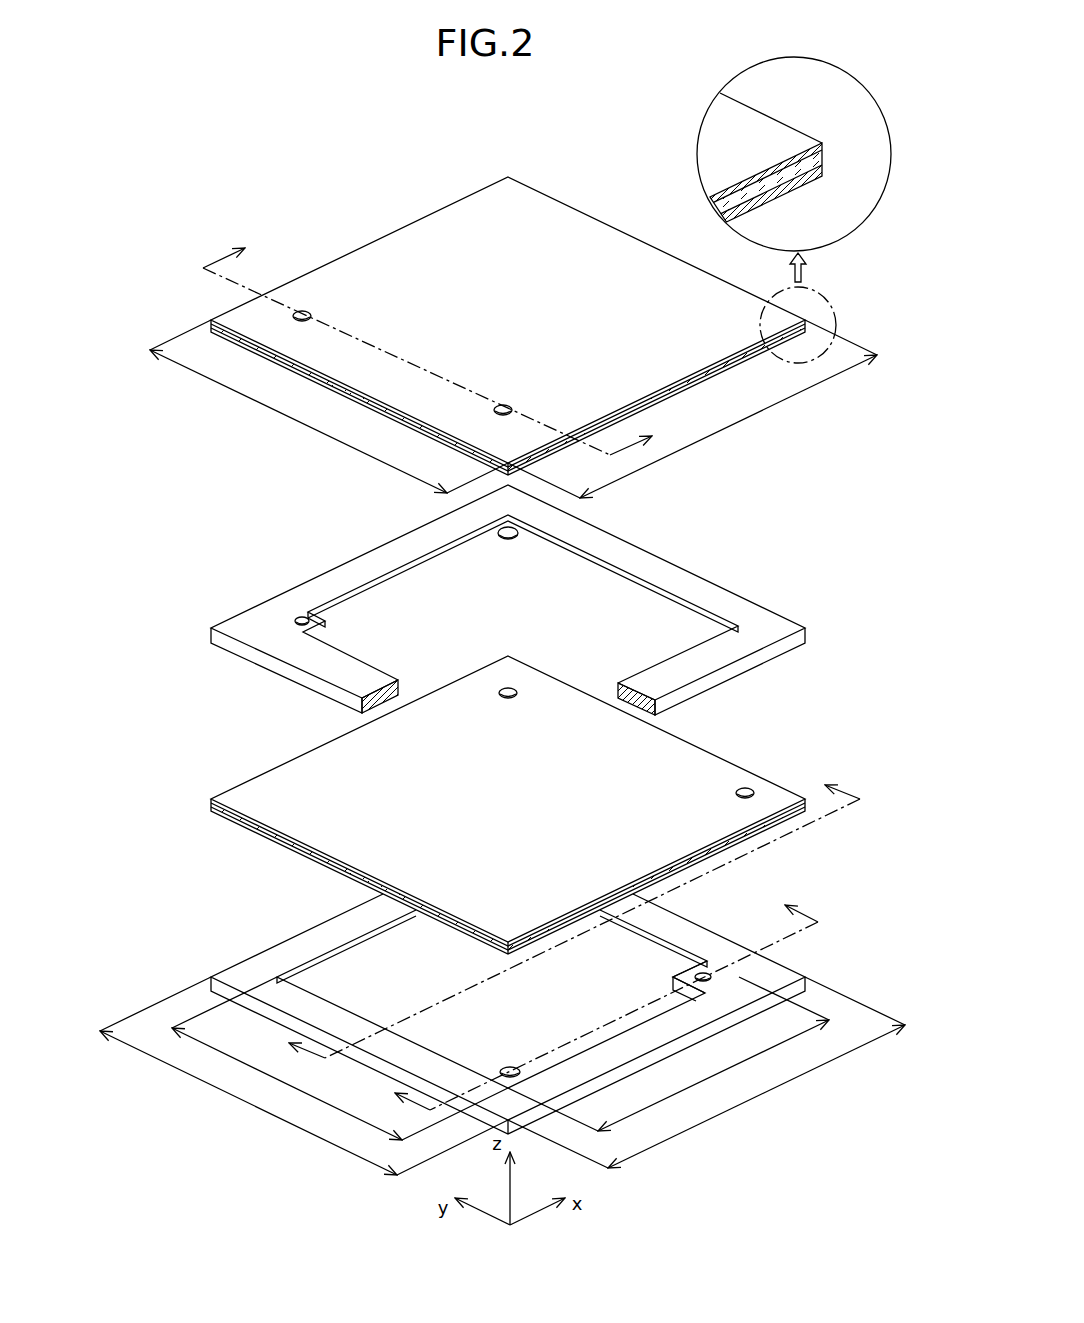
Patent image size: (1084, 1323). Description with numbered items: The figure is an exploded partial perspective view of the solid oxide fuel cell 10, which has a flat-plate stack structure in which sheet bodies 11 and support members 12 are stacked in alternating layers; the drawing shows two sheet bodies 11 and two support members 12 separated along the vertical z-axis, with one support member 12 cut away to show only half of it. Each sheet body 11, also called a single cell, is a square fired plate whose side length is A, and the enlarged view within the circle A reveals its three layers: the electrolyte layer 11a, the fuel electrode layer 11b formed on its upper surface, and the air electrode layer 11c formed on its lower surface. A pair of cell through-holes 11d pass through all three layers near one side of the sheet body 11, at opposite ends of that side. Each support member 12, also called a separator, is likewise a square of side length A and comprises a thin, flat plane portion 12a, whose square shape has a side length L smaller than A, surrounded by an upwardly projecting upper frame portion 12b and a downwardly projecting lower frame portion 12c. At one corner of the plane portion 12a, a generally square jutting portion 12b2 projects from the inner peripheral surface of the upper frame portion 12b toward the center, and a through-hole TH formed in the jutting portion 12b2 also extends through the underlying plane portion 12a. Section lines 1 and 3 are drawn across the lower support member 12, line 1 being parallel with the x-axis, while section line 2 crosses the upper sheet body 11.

The fuel cell 10 is at (562, 158).
The sheet body 11 is at (607, 213).
The electrolyte layer 11a is at (824, 158).
The fuel electrode layer 11b is at (823, 148).
The air electrode layer 11c is at (824, 172).
The cell through-hole 11d is at (302, 311).
The support member 12 is at (536, 806).
The plane portion 12a is at (587, 570).
The upper frame portion 12b is at (730, 598).
The jutting portion 12b2 is at (707, 968).
The lower frame portion 12c is at (742, 675).
The through-hole TH is at (717, 980).
The length of one side A is at (876, 101).
The length of one side of plane portion L is at (500, 1058).
The line 1- 1 is at (608, 1004).
The line 2- 2 is at (435, 345).
The line 3- 3 is at (576, 926).